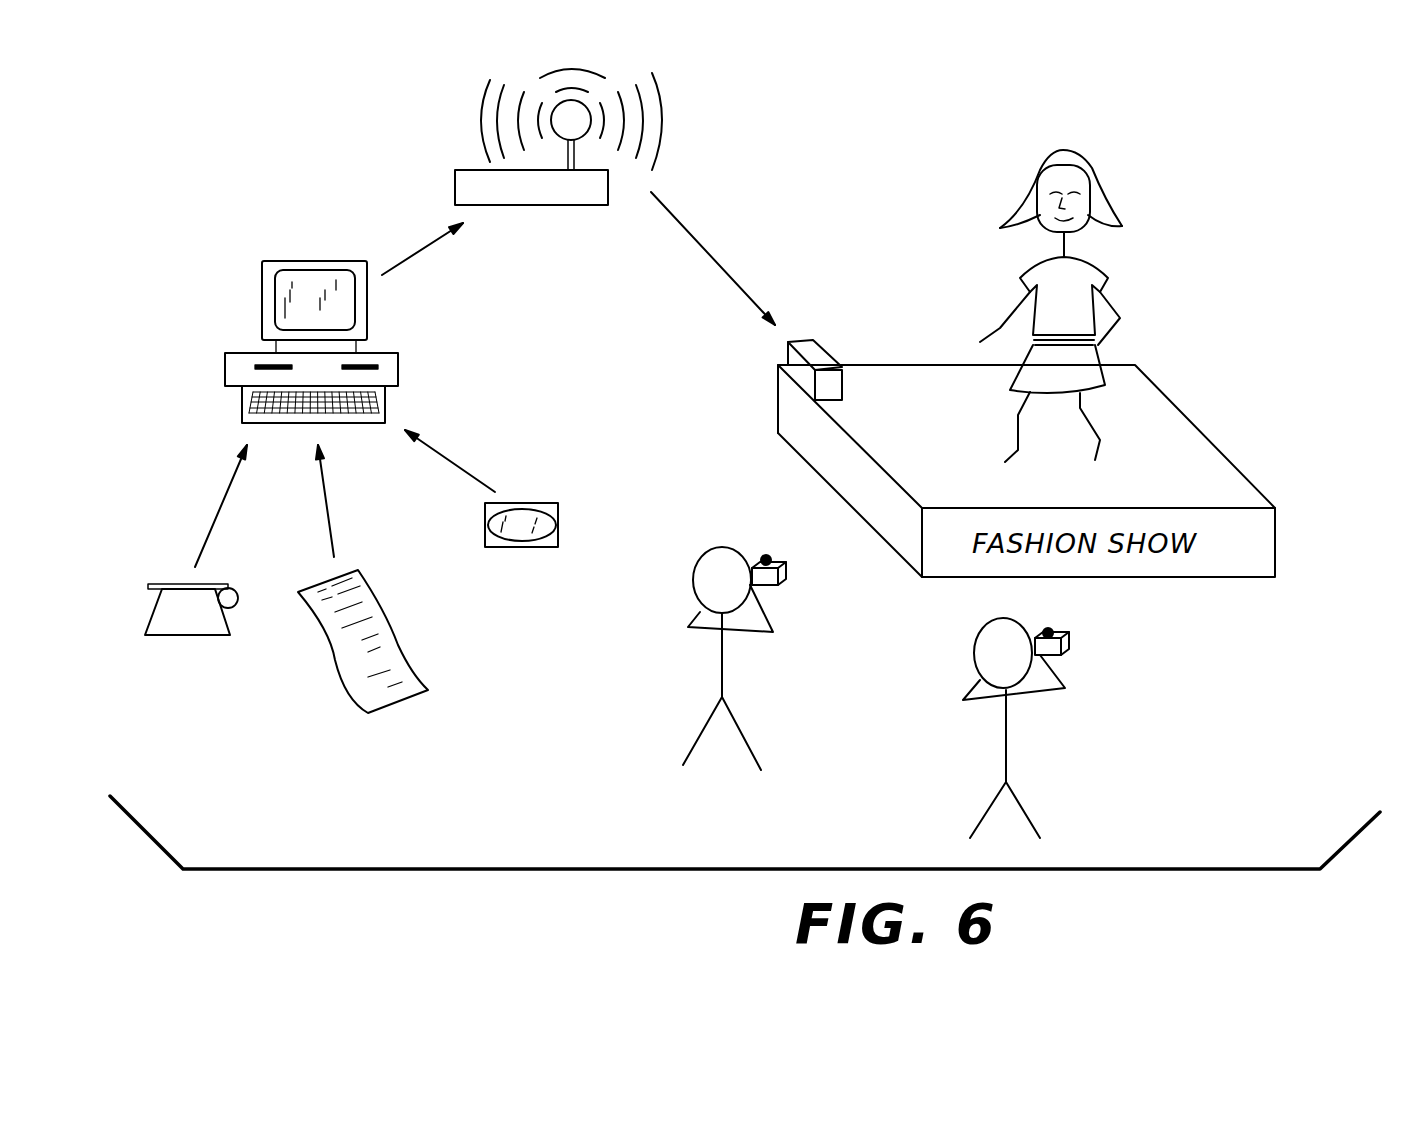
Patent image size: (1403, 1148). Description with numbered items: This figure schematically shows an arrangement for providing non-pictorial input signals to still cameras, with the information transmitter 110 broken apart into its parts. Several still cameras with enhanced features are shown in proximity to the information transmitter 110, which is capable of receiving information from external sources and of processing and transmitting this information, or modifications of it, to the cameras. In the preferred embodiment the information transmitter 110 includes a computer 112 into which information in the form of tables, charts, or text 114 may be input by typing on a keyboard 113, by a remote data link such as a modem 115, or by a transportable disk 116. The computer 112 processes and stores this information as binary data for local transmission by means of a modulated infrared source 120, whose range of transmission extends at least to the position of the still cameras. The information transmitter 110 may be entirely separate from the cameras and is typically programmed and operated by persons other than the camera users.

The information transmitter 110 is at (820, 356).
The computer 112 is at (381, 350).
The keyboard 113 is at (342, 415).
The text 114 is at (390, 640).
The modem 115 is at (200, 583).
The transportable disk 116 is at (518, 503).
The modulated infrared source 120 is at (530, 201).